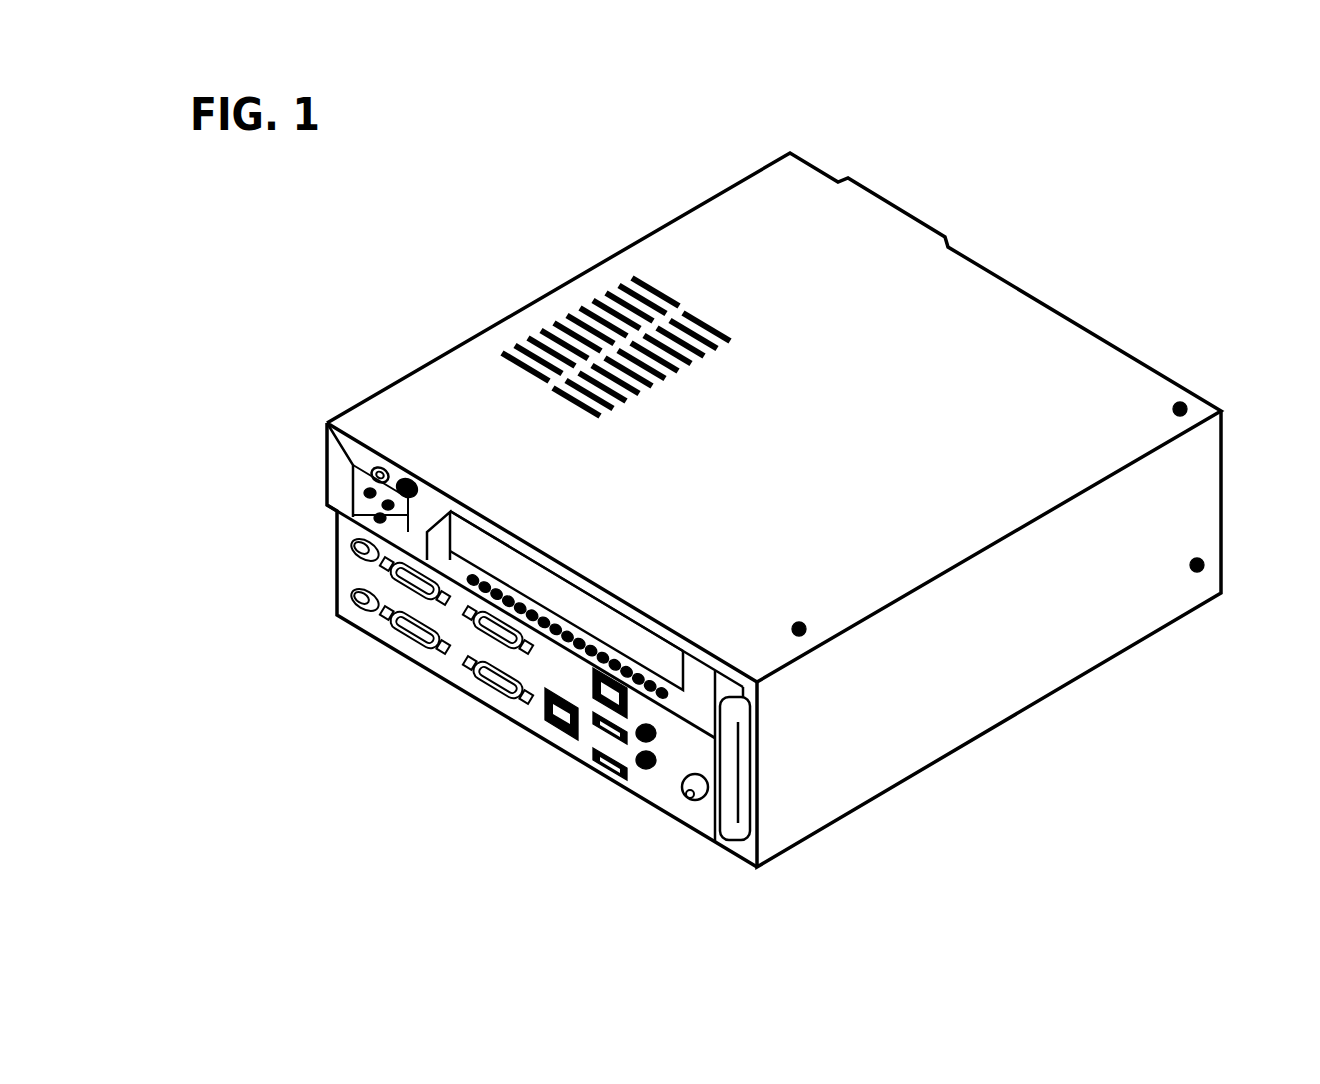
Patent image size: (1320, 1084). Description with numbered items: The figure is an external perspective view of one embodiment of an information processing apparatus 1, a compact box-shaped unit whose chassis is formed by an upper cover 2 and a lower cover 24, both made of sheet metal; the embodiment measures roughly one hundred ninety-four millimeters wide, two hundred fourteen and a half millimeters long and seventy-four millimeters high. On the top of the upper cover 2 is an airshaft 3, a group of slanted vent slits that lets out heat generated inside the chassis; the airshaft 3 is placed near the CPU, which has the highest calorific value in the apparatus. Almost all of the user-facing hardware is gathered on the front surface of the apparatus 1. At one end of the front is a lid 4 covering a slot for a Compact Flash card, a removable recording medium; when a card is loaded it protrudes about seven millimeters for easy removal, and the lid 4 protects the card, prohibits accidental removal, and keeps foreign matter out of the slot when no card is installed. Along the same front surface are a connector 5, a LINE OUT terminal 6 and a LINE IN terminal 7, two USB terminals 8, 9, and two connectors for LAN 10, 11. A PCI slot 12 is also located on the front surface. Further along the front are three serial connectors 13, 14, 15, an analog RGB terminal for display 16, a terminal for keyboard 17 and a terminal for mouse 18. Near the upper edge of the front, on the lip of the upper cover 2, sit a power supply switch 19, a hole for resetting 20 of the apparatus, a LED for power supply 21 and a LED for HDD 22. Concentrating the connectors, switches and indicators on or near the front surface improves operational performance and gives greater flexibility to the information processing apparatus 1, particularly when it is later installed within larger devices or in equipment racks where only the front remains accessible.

The information processing apparatus 1 is at (1078, 232).
The upper cover 2 is at (708, 228).
The airshaft 3 is at (558, 298).
The lid 4 is at (737, 838).
The connector 5 is at (692, 802).
The LINE OUT terminal 6 is at (643, 772).
The LINE IN terminal 7 is at (657, 738).
The USB terminal 8 is at (593, 745).
The USB terminal 9 is at (592, 715).
The connector for LAN 10 is at (650, 663).
The connector for LAN 11 is at (545, 712).
The PCI slot 12 is at (588, 603).
The serial connector 13 is at (503, 592).
The serial connector 14 is at (430, 556).
The serial connector 15 is at (492, 688).
The analog RGB terminal for display 16 is at (396, 642).
The terminal for keyboard 17 is at (352, 600).
The terminal for mouse 18 is at (352, 556).
The power supply switch 19 is at (386, 466).
The hole for resetting 20 is at (335, 521).
The LED for power supply 21 is at (362, 488).
The LED for HDD 22 is at (420, 482).
The lower cover 24 is at (437, 665).